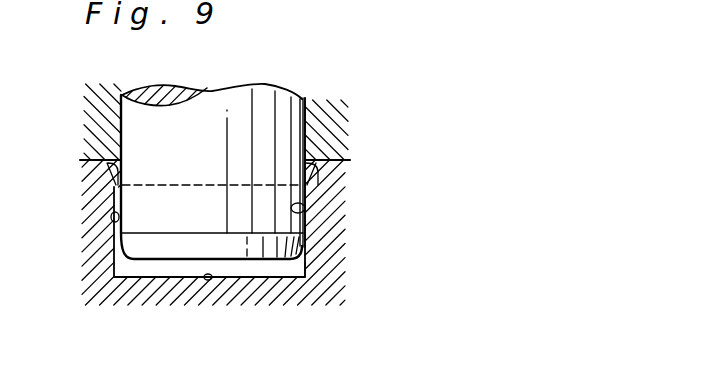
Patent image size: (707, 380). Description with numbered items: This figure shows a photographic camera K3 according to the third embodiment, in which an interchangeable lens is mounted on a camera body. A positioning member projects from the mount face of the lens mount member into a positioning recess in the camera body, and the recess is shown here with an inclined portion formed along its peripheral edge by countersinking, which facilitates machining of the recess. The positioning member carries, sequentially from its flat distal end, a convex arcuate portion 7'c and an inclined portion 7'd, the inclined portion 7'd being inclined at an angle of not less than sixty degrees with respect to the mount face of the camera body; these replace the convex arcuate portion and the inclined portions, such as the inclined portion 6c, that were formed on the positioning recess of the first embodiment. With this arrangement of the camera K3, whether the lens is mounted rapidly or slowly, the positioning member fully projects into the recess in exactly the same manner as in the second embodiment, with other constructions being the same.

The photographic camera K3 is at (423, 102).
The inclined portion 6c is at (306, 210).
The inclined portion 7'd is at (352, 272).
The convex arcuate portion 7'c is at (372, 307).